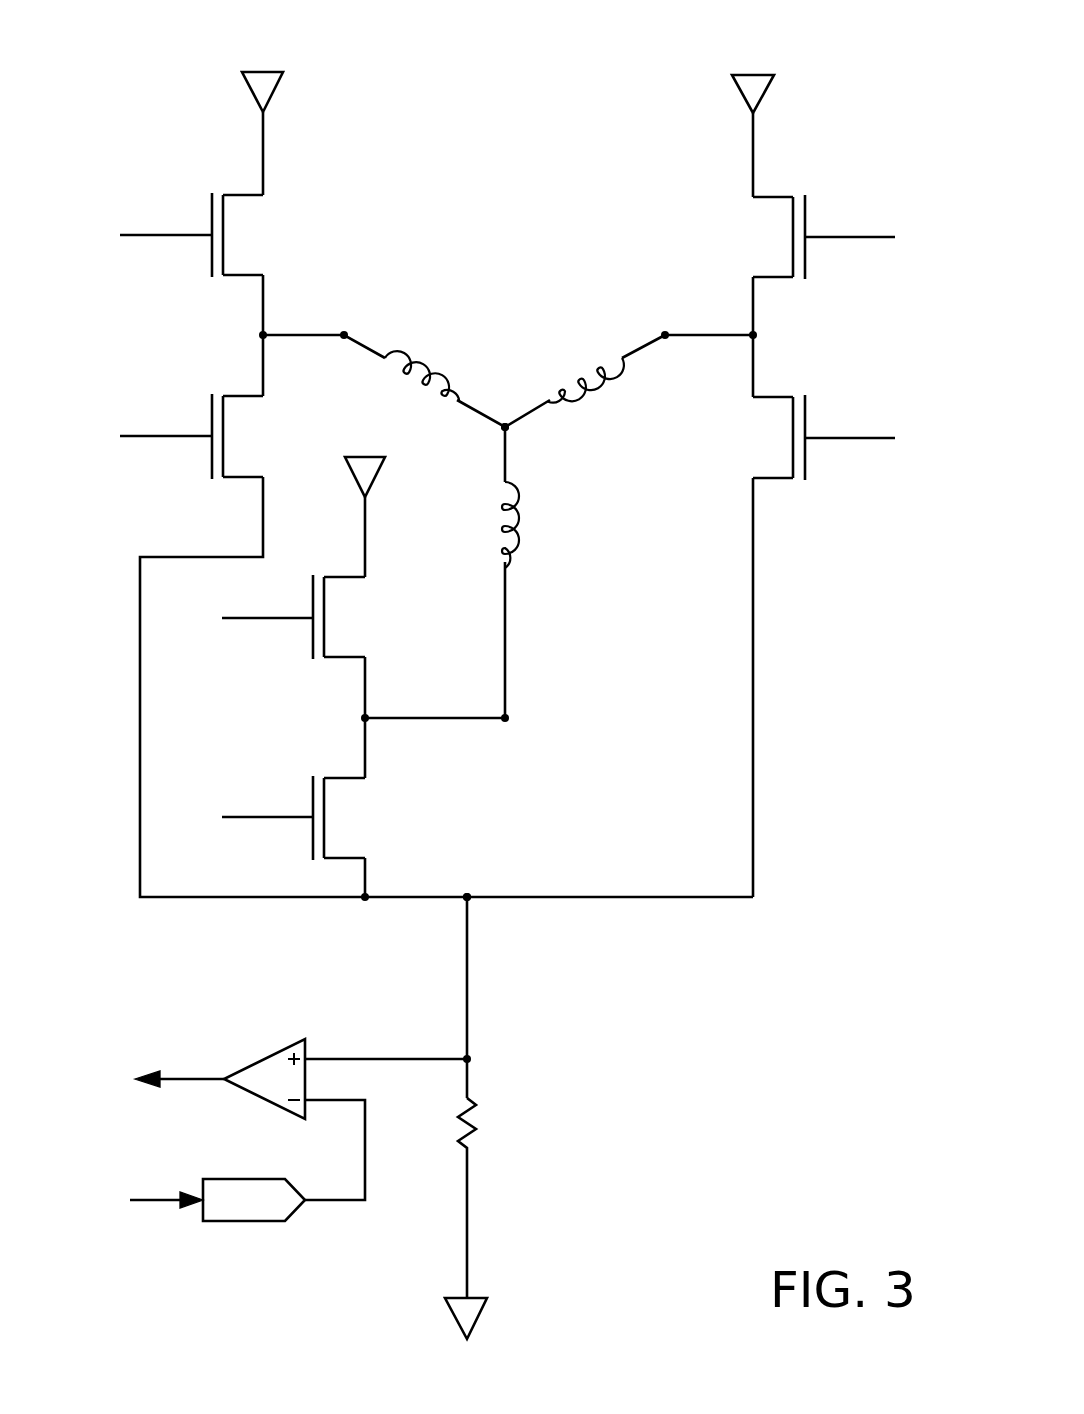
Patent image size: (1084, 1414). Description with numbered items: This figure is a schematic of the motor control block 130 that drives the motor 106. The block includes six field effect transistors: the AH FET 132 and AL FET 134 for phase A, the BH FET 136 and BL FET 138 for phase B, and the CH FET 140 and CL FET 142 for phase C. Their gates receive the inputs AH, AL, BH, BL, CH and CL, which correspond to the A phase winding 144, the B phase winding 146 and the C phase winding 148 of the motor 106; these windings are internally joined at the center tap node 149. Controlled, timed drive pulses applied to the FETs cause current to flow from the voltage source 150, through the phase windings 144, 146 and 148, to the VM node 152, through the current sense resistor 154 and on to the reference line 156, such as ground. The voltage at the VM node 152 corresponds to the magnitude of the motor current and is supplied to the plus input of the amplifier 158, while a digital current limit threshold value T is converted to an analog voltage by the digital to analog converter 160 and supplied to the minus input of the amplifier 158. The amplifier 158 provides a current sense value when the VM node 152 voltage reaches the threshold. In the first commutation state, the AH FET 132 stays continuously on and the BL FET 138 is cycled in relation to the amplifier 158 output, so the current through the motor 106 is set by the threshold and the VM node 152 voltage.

The motor control block 130 is at (186, 58).
The motor 106 is at (506, 320).
The AH FET 132 is at (212, 212).
The AL FET 134 is at (212, 415).
The BH FET 136 is at (805, 218).
The BL FET 138 is at (808, 458).
The CH FET 140 is at (313, 640).
The CL FET 142 is at (313, 845).
The A phase winding 144 is at (398, 356).
The B phase winding 146 is at (592, 386).
The C phase winding 148 is at (515, 550).
The center tap node 149 is at (502, 428).
The voltage source 150 is at (263, 72).
The VM node 152 is at (467, 870).
The current sense resistor 154 is at (478, 1143).
The reference line 156 is at (485, 1310).
The amplifier 158 is at (265, 1058).
The digital to analog converter 160 is at (257, 1221).